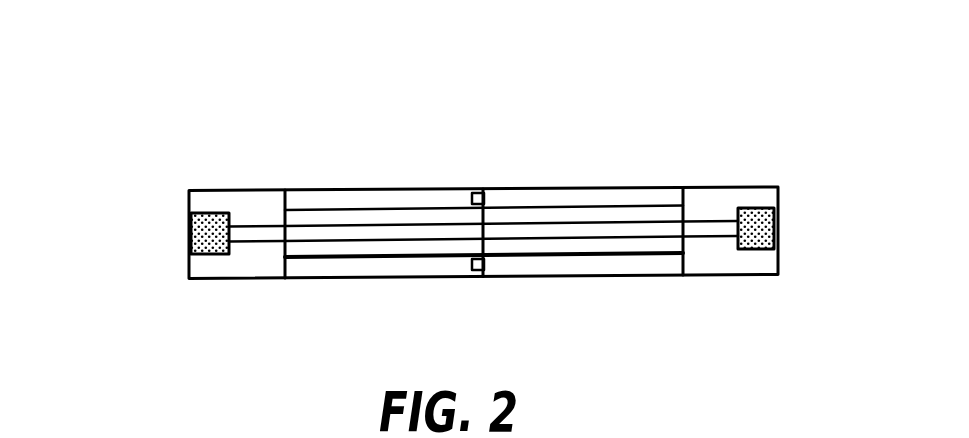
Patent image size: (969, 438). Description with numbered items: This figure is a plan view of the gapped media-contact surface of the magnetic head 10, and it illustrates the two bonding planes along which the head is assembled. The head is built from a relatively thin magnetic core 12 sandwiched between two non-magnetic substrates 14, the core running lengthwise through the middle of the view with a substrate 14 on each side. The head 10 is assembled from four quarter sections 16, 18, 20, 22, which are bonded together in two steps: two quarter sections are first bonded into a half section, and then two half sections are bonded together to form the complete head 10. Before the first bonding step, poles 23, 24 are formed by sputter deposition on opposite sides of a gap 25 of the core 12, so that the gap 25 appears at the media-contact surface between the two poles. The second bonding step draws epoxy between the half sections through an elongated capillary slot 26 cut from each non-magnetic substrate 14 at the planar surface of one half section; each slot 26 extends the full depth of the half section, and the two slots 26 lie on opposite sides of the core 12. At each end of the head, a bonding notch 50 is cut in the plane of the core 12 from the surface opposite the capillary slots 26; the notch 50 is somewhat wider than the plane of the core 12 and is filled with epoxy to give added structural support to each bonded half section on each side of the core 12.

The magnetic head 10 is at (690, 168).
The magnetic core 12 is at (249, 228).
The non-magnetic substrate 14 is at (758, 195).
The quarter section 16 is at (293, 278).
The quarter section 18 is at (297, 193).
The quarter section 20 is at (677, 276).
The quarter section 22 is at (627, 188).
The pole 23 is at (415, 226).
The pole 24 is at (520, 228).
The gap 25 is at (483, 228).
The capillary slot 26 is at (490, 192).
The bonding notch 50 is at (188, 238).